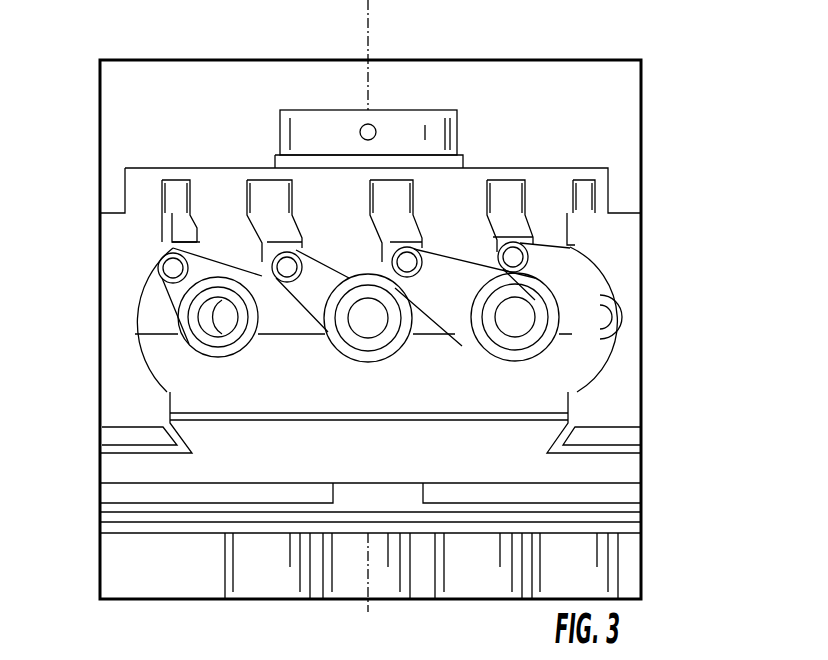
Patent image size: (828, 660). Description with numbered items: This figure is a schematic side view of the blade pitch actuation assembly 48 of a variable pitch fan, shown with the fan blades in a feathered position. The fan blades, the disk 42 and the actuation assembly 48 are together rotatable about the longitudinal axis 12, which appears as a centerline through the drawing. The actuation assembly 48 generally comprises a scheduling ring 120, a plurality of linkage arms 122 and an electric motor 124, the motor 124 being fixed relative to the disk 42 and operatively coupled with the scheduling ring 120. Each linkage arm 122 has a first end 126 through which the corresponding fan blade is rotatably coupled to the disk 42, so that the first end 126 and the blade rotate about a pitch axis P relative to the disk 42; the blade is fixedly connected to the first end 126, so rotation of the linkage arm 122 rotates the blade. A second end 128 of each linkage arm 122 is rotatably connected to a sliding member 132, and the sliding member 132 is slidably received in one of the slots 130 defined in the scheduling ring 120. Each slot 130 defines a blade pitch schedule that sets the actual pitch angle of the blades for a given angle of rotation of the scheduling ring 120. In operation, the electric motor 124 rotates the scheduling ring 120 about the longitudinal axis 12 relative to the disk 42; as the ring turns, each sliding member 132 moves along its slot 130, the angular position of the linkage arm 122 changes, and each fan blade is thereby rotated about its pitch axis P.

The longitudinal axis 12 is at (368, 22).
The disk 42 is at (295, 387).
The blade pitch actuation assembly 48 is at (678, 73).
The scheduling ring 120 is at (222, 182).
The linkage arm 122 is at (445, 272).
The electric motor 124 is at (303, 125).
The first end 126 is at (392, 348).
The second end 128 is at (513, 257).
The slot 130 is at (260, 182).
The sliding member 132 is at (262, 235).
The pitch axis P is at (370, 322).